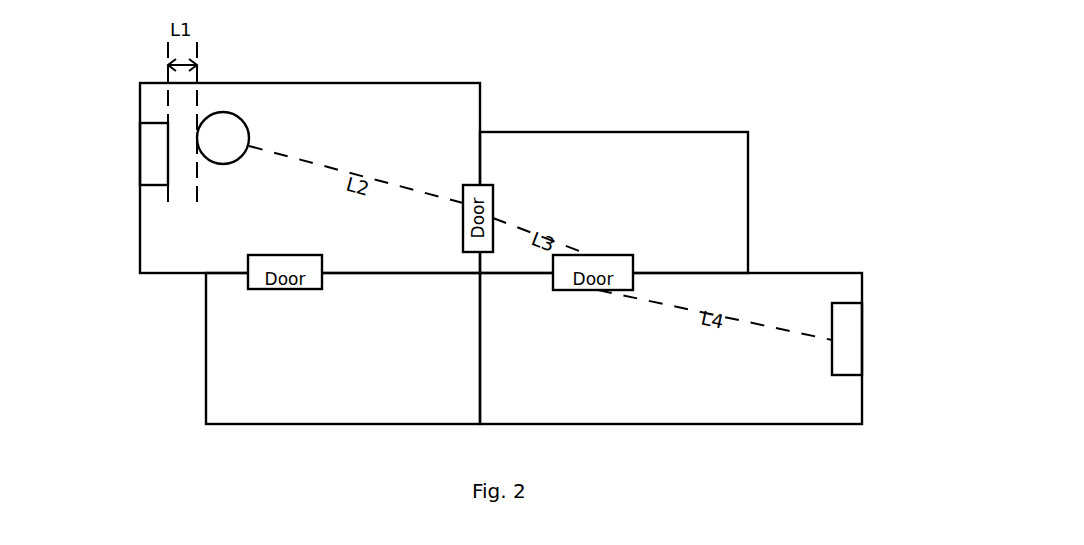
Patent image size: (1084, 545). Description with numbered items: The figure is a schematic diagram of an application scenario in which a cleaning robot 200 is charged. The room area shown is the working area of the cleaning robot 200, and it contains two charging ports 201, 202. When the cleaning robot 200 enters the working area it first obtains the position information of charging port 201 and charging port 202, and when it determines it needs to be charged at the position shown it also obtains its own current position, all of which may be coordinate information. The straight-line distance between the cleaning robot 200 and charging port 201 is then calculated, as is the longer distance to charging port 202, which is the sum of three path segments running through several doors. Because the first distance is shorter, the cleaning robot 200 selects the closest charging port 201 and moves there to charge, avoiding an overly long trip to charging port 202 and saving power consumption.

The cleaning robot 200 is at (224, 112).
The charging port 201 is at (140, 162).
The charging port 202 is at (862, 352).